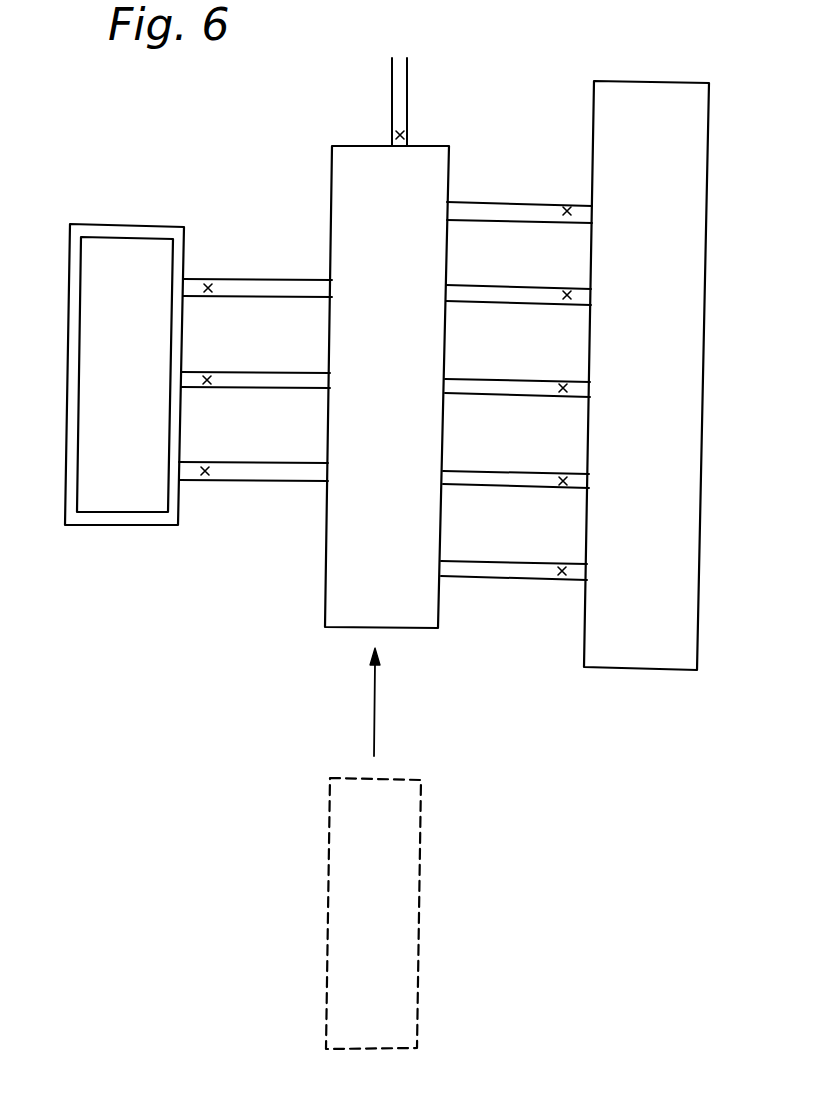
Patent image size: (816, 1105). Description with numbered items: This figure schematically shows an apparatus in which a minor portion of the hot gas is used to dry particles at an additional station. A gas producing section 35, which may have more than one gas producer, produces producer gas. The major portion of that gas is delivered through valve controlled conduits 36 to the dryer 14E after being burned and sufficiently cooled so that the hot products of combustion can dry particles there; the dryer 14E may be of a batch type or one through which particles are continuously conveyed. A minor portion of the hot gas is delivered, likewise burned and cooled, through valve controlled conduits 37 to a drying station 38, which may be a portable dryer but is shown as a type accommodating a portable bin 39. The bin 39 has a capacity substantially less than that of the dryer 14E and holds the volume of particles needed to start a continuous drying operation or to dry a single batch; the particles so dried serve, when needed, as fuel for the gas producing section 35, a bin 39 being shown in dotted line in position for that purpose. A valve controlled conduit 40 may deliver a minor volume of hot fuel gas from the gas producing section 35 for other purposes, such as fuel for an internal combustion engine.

The gas producing section 35 is at (322, 553).
The valve controlled conduits 36 is at (540, 307).
The valve controlled conduits 37 is at (268, 299).
The drying station 38 is at (61, 433).
The portable bin 39 is at (81, 268).
The valve controlled conduit 40 is at (392, 82).
The dryer 14E is at (588, 171).